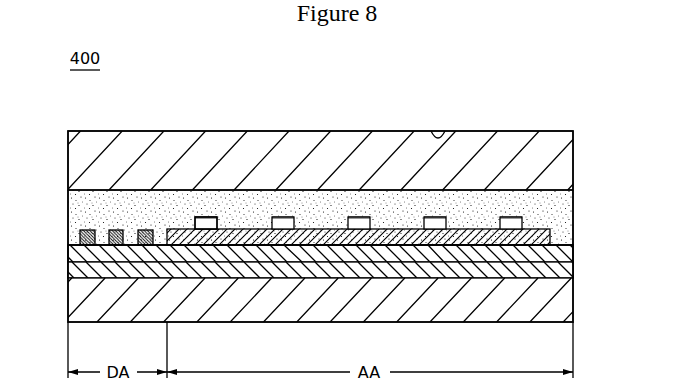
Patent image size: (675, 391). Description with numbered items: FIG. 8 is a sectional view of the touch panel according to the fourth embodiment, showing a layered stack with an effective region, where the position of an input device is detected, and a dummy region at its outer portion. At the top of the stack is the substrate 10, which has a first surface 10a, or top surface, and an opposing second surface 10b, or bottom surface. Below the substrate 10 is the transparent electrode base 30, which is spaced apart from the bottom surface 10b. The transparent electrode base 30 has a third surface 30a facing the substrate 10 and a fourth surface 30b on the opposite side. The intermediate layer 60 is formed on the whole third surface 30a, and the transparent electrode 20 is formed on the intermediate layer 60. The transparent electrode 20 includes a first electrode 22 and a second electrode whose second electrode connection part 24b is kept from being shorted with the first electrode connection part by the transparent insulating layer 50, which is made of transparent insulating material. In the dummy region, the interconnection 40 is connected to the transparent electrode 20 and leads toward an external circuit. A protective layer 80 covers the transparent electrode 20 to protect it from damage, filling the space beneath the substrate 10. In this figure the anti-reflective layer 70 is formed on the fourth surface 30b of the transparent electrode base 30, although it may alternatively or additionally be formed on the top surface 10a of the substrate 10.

The substrate 10 is at (556, 158).
The first surface 10a is at (443, 131).
The second surface 10b is at (505, 190).
The protective layer 80 is at (82, 204).
The intermediate layer 60 is at (565, 257).
The transparent electrode base 30 is at (498, 268).
The third surface 30a is at (408, 265).
The fourth surface 30b is at (369, 278).
The anti-reflective layer 70 is at (537, 305).
The transparent insulating layer 50 is at (548, 228).
The first electrode 22 is at (318, 232).
The transparent electrode 20 is at (206, 223).
The second electrode connection part 24b is at (518, 217).
The interconnection 40 is at (80, 237).